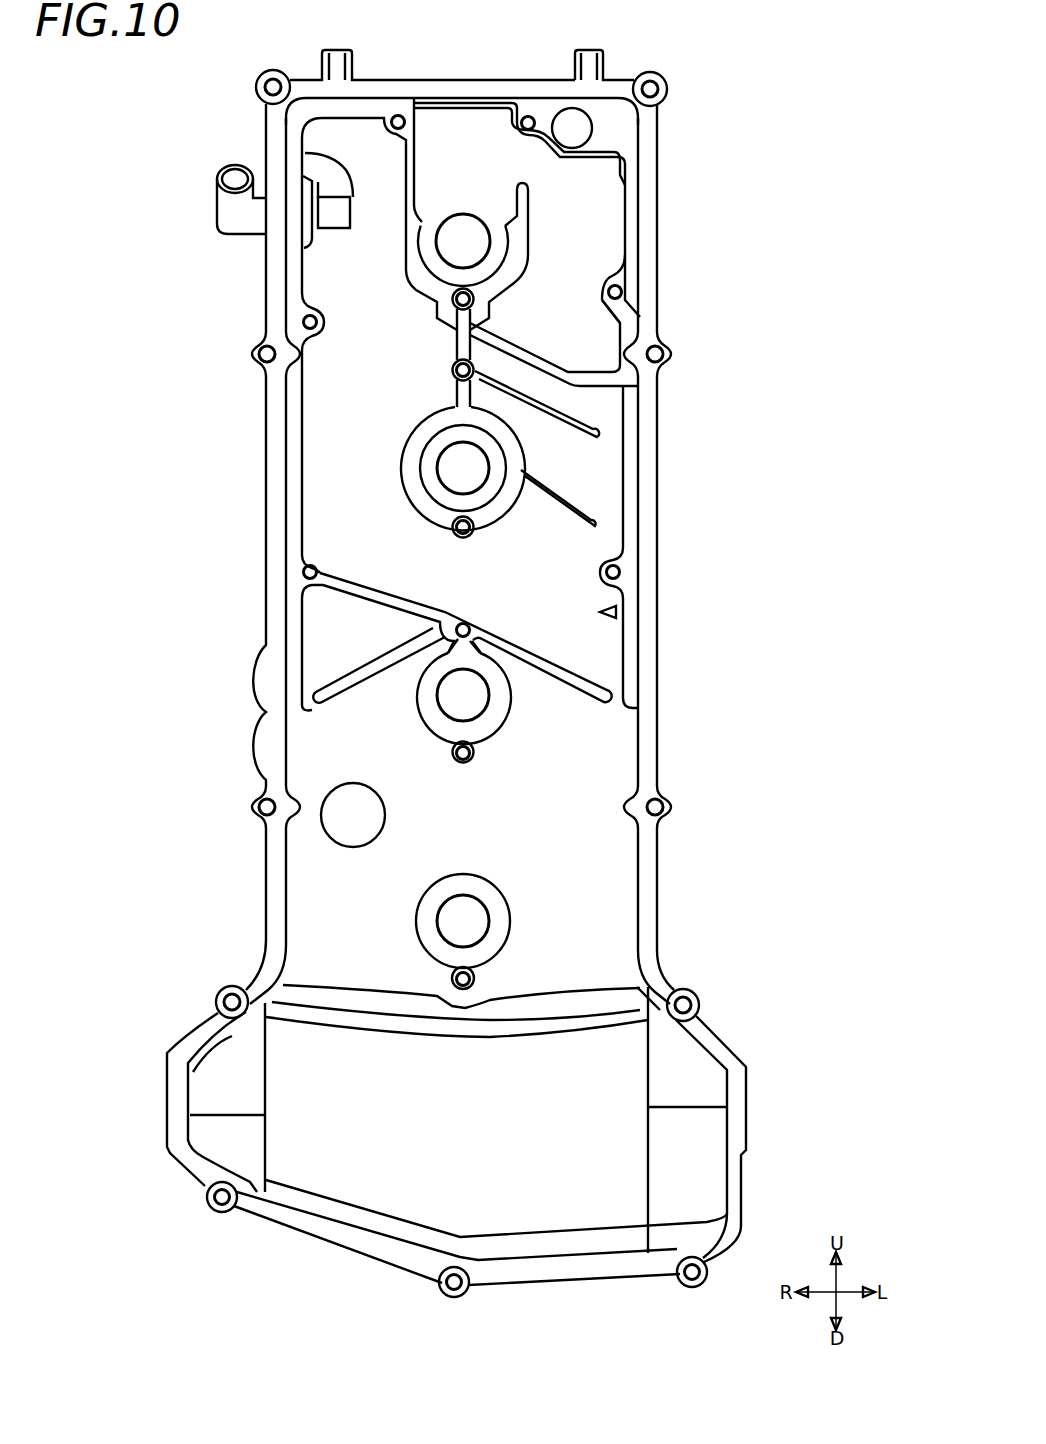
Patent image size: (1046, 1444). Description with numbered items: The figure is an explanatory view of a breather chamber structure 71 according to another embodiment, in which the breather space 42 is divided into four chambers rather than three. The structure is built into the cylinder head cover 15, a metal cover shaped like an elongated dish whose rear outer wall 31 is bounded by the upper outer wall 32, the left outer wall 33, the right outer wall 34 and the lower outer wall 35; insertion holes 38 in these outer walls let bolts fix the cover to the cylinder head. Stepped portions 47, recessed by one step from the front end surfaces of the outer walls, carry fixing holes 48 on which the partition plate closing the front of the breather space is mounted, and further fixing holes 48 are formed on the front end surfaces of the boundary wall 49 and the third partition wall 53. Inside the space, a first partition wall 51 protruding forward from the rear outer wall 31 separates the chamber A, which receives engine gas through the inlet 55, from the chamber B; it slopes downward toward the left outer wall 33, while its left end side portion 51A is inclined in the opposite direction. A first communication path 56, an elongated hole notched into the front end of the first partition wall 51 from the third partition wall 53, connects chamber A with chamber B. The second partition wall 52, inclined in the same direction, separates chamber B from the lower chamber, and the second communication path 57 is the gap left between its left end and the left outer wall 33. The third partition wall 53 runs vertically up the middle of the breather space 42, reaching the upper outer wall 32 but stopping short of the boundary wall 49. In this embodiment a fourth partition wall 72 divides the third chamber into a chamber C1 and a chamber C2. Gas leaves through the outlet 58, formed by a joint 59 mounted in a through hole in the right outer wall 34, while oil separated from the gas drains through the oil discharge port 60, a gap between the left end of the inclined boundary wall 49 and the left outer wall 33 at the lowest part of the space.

The cylinder head cover 15 is at (281, 48).
The rear outer wall 31 is at (567, 835).
The upper outer wall 32 is at (440, 75).
The left outer wall 33 is at (660, 655).
The right outer wall 34 is at (265, 545).
The lower outer wall 35 is at (390, 1263).
The insertion holes 38 is at (258, 812).
The breather space 42 is at (616, 612).
The stepped portions 47 is at (374, 105).
The fixing holes 48 is at (305, 320).
The boundary wall 49 is at (375, 620).
The first partition wall 51 is at (558, 360).
The left end side portion of the first partition wall 51A is at (622, 330).
The second partition wall 52 is at (533, 407).
The third partition wall 53 is at (455, 383).
The inlet 55 is at (470, 135).
The first communication path 56 is at (505, 335).
The second communication path 57 is at (630, 450).
The outlet 58 is at (305, 153).
The joint 59 is at (220, 200).
The oil discharge port 60 is at (615, 710).
The breather chamber structure 71 is at (638, 46).
The fourth partition wall 72 is at (580, 503).
The chamber A is at (585, 237).
The chamber B is at (605, 415).
The chamber C1 is at (580, 470).
The chamber C2 is at (345, 420).